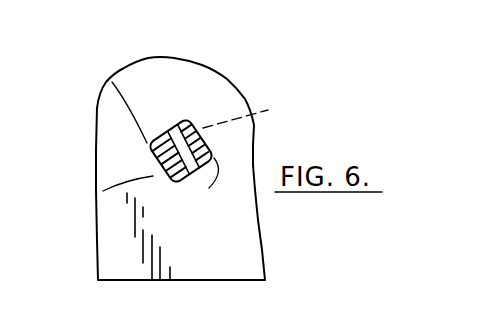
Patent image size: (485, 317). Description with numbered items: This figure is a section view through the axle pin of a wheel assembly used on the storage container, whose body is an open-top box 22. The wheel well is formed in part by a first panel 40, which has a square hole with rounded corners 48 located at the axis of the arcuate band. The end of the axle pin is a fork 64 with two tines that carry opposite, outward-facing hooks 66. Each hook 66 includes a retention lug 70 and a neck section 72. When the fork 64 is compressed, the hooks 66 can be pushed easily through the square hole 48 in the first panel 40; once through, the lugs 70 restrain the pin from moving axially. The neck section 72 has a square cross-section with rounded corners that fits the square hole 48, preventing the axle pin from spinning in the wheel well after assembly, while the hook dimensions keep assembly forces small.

The open-top box 22 is at (149, 168).
The first panel 40 is at (107, 123).
The square hole with rounded corners 48 is at (177, 117).
The fork 64 is at (165, 134).
The hooks 66 is at (166, 180).
The retention lug 70 is at (103, 191).
The neck section 72 is at (112, 82).